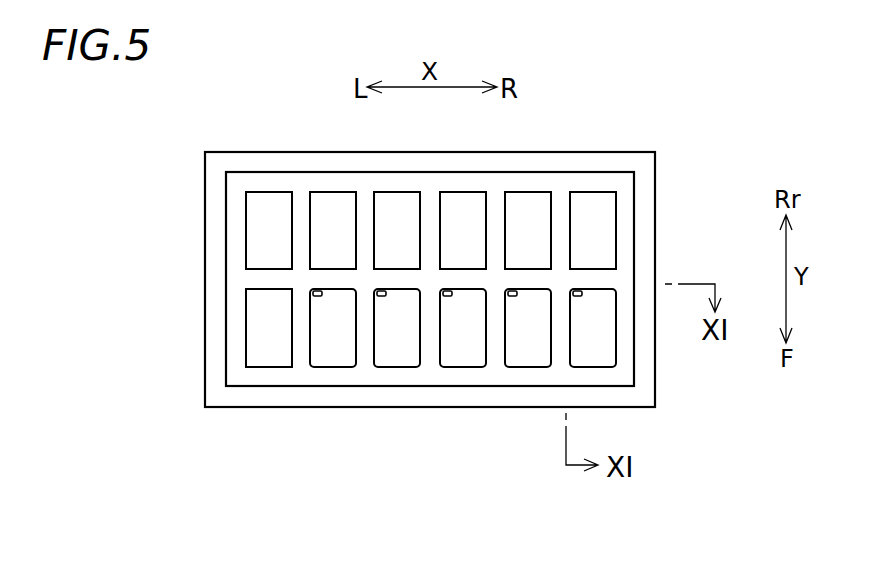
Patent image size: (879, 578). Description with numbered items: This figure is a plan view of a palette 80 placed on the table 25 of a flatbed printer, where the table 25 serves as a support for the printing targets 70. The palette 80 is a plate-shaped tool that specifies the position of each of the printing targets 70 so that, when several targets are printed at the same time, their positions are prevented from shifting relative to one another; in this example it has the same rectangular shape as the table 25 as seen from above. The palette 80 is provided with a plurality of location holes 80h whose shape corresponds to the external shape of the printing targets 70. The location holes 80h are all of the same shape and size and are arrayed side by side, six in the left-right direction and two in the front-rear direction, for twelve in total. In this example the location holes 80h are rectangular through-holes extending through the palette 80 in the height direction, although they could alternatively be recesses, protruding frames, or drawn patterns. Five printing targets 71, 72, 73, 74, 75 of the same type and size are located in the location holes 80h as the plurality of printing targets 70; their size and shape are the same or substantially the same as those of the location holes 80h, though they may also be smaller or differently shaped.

The table 25 is at (655, 189).
The palette 80 is at (634, 230).
The location holes 80h is at (618, 246).
The printing targets 70 is at (458, 413).
The printing target 71 is at (572, 379).
The printing target 72 is at (520, 349).
The printing target 73 is at (452, 349).
The printing target 74 is at (387, 349).
The printing target 75 is at (323, 349).